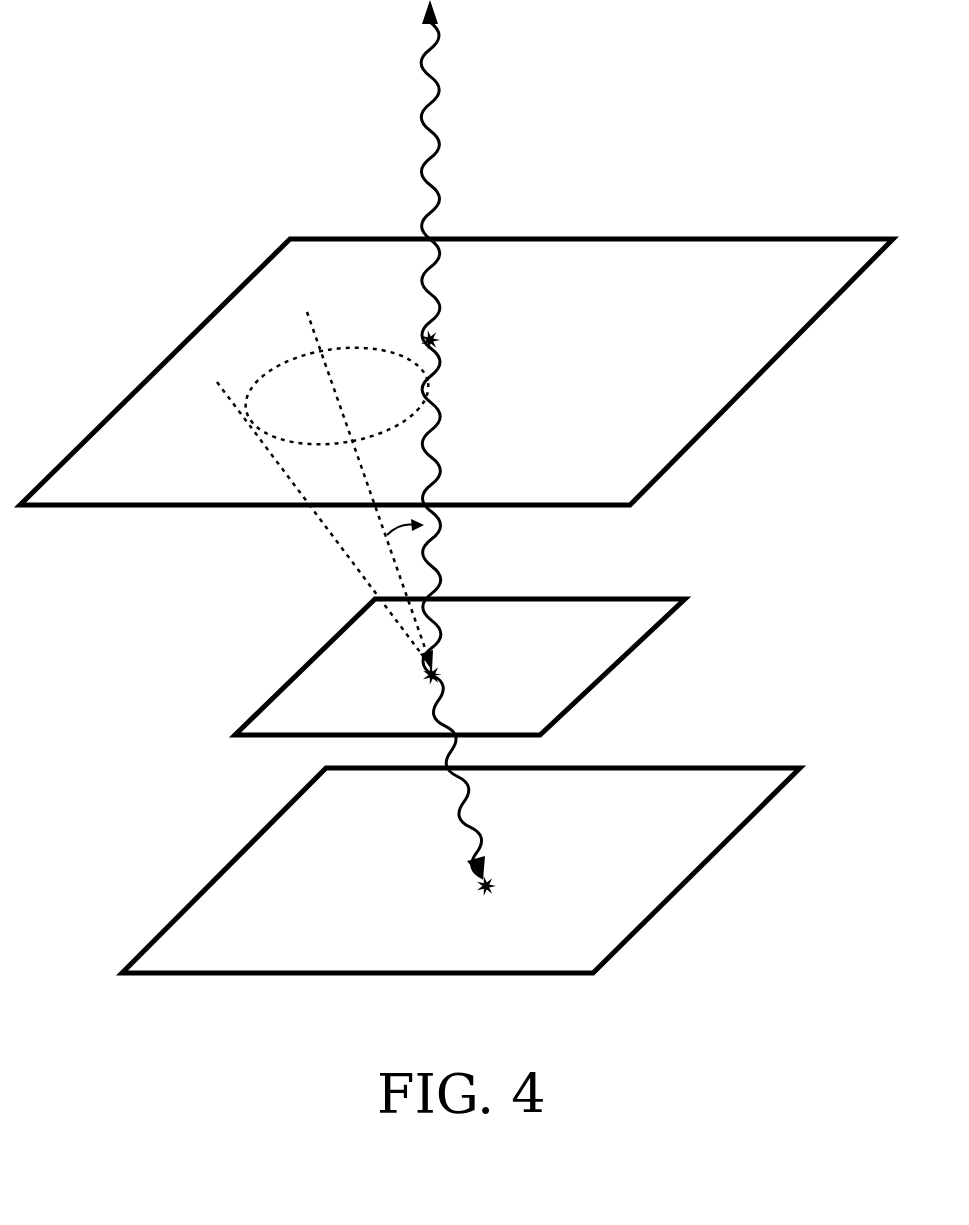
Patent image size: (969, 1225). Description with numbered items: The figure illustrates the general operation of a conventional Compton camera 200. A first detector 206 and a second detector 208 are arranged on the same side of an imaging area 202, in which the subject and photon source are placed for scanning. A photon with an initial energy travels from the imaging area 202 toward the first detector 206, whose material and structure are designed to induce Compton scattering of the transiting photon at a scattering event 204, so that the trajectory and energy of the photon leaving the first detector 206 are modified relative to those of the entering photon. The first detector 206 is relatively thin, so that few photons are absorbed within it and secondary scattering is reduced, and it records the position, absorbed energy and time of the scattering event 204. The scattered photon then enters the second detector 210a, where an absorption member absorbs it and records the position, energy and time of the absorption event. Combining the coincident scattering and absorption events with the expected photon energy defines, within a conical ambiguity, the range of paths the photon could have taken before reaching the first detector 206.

The Compton camera 200 is at (259, 158).
The imaging area 202 is at (636, 287).
The photon interaction point 204 is at (432, 338).
The first detector 206 is at (628, 613).
The second detector 208 is at (598, 795).
The entry of scattered photons into the second detector 210a is at (490, 886).